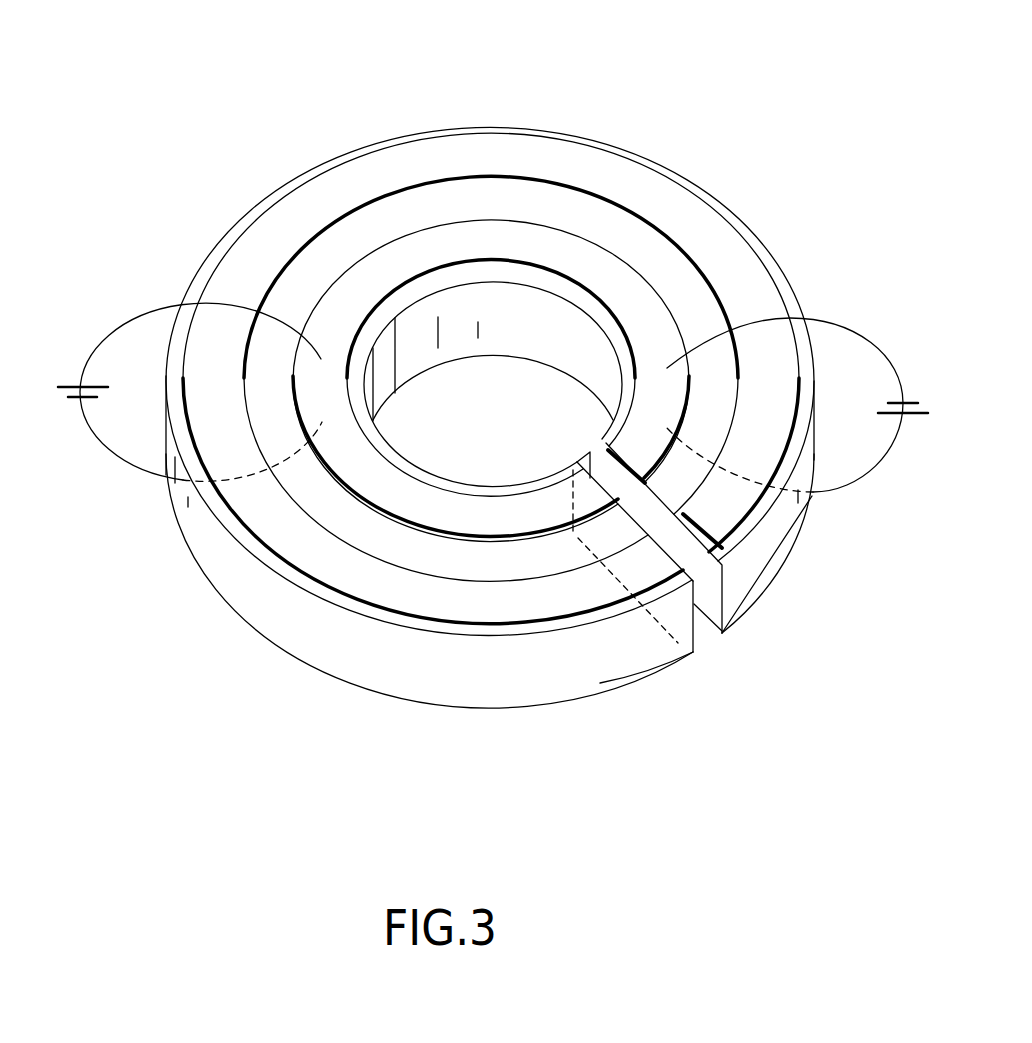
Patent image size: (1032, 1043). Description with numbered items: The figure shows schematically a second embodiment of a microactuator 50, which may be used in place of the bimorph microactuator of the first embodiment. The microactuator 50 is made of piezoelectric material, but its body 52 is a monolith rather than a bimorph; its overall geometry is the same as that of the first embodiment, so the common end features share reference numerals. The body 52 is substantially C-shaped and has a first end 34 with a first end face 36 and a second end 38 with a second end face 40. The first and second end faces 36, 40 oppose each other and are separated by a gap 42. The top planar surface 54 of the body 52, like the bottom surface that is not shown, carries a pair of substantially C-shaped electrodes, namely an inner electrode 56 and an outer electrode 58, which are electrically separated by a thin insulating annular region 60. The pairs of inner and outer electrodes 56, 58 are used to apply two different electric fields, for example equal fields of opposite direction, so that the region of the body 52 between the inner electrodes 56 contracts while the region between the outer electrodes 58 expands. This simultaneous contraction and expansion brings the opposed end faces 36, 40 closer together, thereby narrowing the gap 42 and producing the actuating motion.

The first end 34 is at (691, 650).
The first end face 36 is at (672, 613).
The second end 38 is at (721, 610).
The second end face 40 is at (714, 583).
The gap 42 is at (705, 650).
The microactuator 50 is at (726, 126).
The body 52 is at (748, 227).
The top planar surface 54 is at (220, 508).
The inner electrode 56 is at (660, 335).
The outer electrode 58 is at (754, 297).
The insulating annular region 60 is at (432, 557).